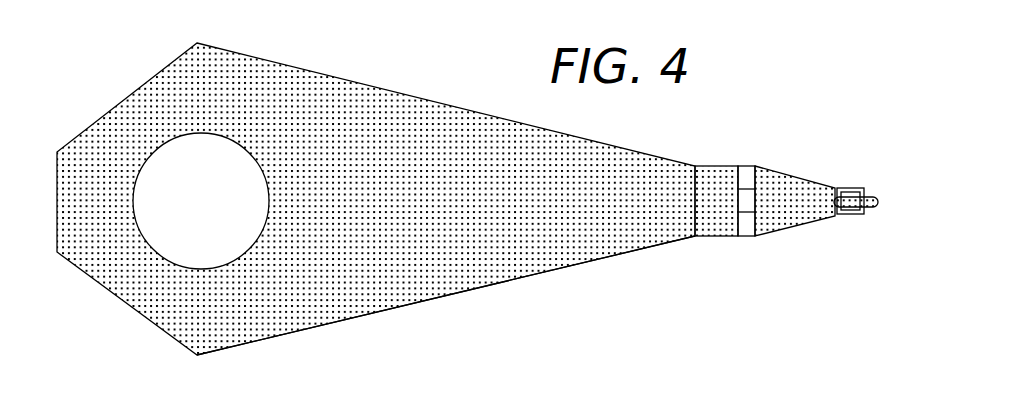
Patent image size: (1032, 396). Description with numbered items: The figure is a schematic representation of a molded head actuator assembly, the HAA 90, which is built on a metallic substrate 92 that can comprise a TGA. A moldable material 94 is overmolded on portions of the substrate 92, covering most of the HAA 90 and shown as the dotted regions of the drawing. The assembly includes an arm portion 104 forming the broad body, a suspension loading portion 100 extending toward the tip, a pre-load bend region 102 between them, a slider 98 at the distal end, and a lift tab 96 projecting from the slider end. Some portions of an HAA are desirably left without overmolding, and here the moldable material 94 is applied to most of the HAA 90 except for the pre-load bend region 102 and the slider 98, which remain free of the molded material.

The HAA 90 is at (660, 296).
The metallic substrate 92 is at (746, 166).
The moldable material 94 is at (461, 109).
The lift tab 96 is at (874, 193).
The slider 98 is at (855, 218).
The suspension loading portion 100 is at (791, 237).
The pre-load bend region 102 is at (748, 237).
The arm portion 104 is at (505, 282).